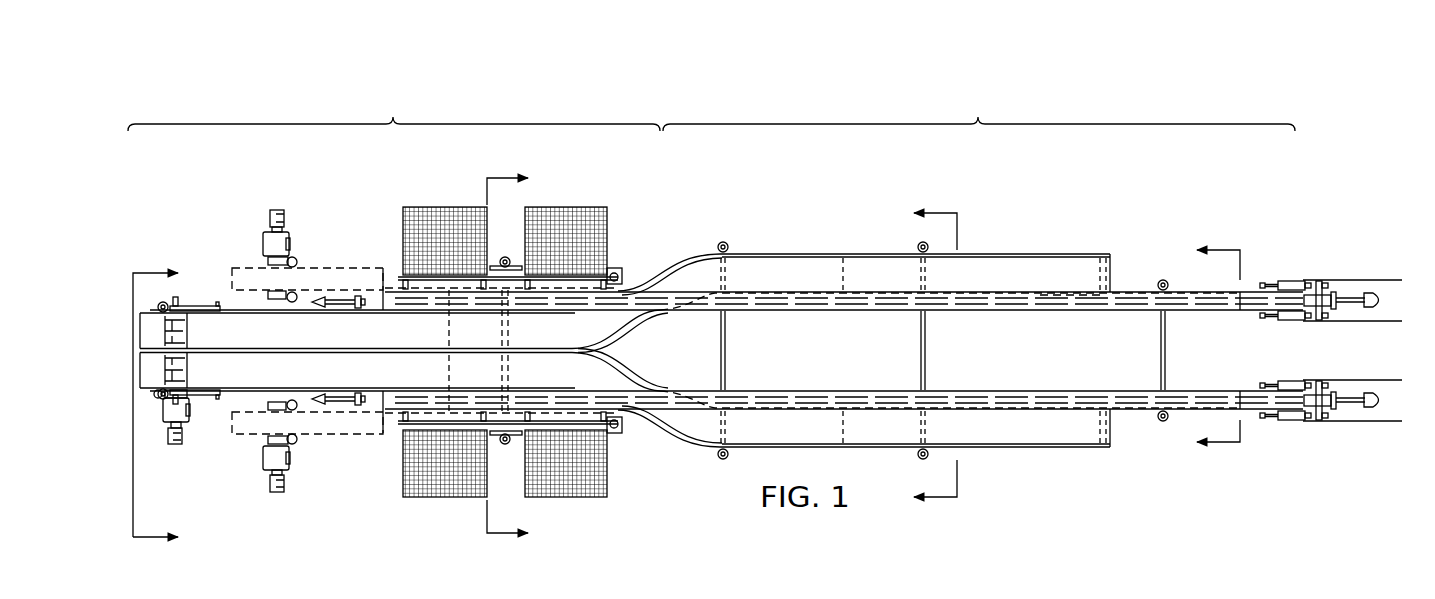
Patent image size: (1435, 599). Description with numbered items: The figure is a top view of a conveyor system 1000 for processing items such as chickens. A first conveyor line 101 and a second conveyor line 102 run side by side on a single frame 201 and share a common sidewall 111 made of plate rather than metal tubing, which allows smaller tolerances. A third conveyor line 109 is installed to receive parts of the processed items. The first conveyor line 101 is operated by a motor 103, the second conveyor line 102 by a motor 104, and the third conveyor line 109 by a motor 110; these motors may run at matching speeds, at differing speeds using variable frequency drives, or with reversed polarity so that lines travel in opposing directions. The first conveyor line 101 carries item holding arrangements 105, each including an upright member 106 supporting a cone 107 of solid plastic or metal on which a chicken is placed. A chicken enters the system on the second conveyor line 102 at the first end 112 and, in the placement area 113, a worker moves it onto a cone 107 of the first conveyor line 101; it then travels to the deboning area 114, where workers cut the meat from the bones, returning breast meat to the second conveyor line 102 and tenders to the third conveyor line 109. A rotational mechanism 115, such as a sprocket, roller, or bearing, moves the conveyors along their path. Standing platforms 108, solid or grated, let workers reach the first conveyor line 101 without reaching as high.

The conveyor system 1000 is at (768, 283).
The first conveyor line 101 is at (992, 292).
The second conveyor line 102 is at (828, 252).
The first conveyor line motor 103 is at (379, 458).
The second conveyor line motor 104 is at (175, 446).
The item holding arrangement 105 is at (1369, 423).
The upright member 106 is at (1351, 423).
The cone 107 is at (1372, 292).
The standing platform 108 is at (437, 499).
The third conveyor line 109 is at (322, 266).
The third conveyor line motor 110 is at (266, 222).
The common sidewall 111 is at (1067, 290).
The first end 112 is at (1193, 205).
The placement area 113 is at (979, 109).
The deboning area 114 is at (394, 110).
The rotational mechanism 115 is at (1308, 423).
The frame 201 is at (764, 252).